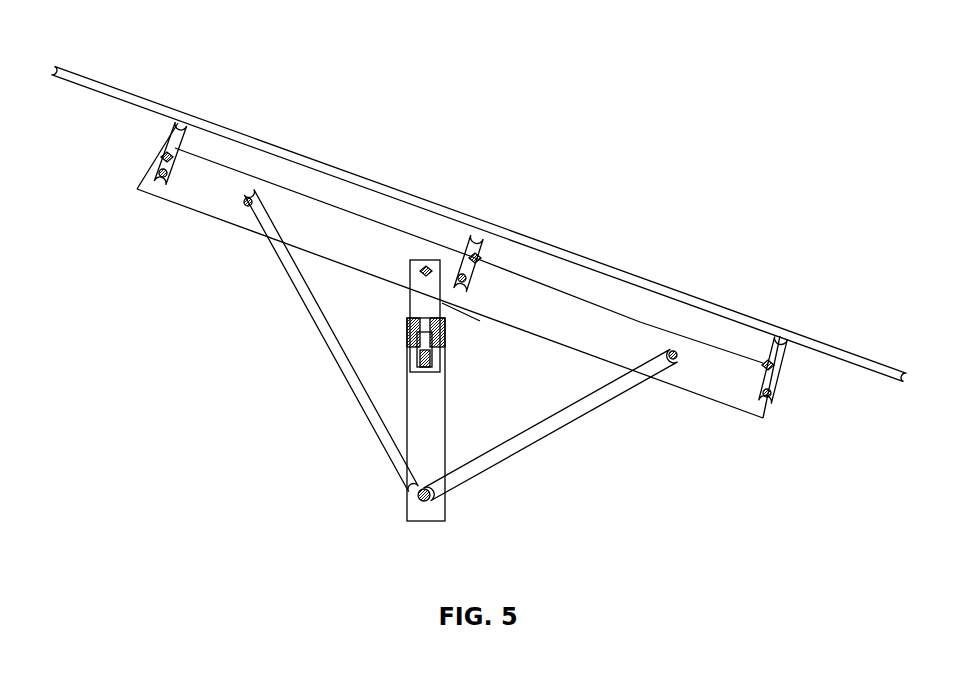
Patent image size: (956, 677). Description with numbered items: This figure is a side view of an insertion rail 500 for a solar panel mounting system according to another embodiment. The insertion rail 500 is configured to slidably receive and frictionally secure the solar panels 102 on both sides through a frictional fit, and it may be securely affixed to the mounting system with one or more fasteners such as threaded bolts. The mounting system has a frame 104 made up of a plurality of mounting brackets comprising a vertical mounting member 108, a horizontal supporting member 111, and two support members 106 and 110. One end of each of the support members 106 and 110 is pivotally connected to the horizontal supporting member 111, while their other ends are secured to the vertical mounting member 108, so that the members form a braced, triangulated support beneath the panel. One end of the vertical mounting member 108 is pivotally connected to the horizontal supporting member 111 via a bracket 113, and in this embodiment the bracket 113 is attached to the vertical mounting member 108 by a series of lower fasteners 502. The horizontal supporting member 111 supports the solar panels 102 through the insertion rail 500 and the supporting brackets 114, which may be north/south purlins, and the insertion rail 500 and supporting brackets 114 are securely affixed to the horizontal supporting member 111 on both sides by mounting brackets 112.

The insertion rail 500 is at (483, 211).
The solar panel 102 is at (70, 71).
The frame 104 is at (407, 270).
The support member 106 is at (315, 325).
The vertical mounting member 108 is at (418, 405).
The support member 110 is at (558, 423).
The horizontal supporting member 111 is at (184, 194).
The mounting bracket 112 is at (179, 118).
The bracket 113 is at (405, 305).
The supporting bracket 114 is at (173, 131).
The lower fastener 502 is at (443, 347).